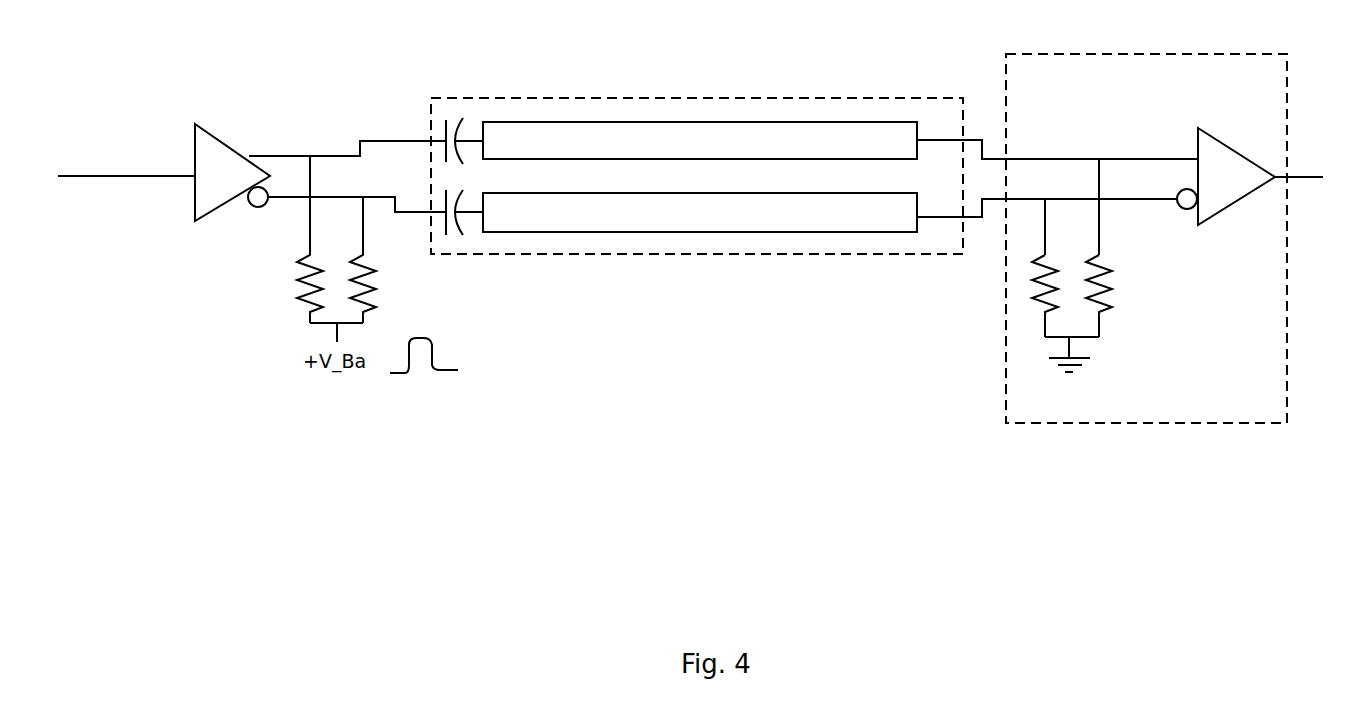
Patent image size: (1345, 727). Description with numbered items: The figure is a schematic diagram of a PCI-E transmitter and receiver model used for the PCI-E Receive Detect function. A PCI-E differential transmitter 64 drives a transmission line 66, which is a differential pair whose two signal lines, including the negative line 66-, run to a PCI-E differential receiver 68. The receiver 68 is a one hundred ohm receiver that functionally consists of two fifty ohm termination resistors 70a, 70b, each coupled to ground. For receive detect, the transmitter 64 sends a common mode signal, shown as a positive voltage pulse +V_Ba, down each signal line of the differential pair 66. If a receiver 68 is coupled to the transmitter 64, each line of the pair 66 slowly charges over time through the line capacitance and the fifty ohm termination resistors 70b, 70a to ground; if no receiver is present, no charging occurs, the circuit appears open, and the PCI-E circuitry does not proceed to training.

The PCI-E differential transmitter 64 is at (218, 135).
The transmission line 66 is at (517, 94).
The transmission line 66- is at (295, 198).
The PCI-E differential receiver 68 is at (1137, 227).
The termination resistor 70a is at (1022, 304).
The termination resistor 70b is at (1115, 289).